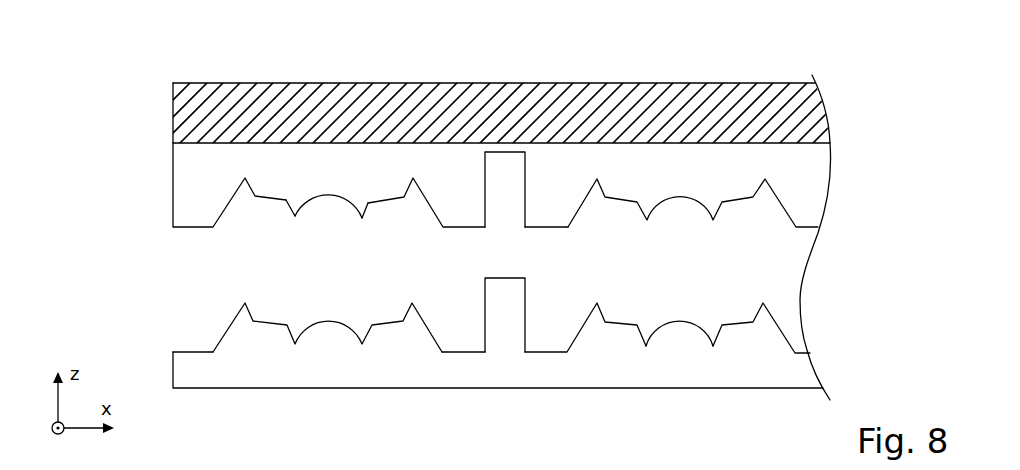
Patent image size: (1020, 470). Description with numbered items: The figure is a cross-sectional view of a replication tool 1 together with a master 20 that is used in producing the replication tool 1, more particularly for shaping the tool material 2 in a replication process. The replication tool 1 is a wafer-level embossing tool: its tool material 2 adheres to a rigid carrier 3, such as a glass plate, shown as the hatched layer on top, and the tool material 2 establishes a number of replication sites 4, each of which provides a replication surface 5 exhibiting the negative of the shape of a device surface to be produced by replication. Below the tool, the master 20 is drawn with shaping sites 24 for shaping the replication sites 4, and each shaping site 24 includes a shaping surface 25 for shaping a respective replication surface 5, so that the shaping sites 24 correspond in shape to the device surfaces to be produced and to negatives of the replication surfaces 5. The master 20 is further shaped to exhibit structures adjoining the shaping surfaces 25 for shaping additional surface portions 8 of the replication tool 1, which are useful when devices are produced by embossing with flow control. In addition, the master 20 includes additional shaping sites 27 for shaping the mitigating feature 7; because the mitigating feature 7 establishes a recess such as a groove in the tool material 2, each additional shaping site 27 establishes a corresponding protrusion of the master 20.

The replication tool 1 is at (104, 161).
The tool material 2 is at (187, 195).
The rigid carrier 3 is at (187, 117).
The replication site 4 is at (578, 233).
The replication surface 5 is at (303, 207).
The mitigating feature 7 is at (503, 177).
The additional surface portion 8 is at (295, 207).
The master 20 is at (146, 354).
The shaping site 24 is at (225, 300).
The shaping surface 25 is at (678, 322).
The additional shaping site 27 is at (507, 325).